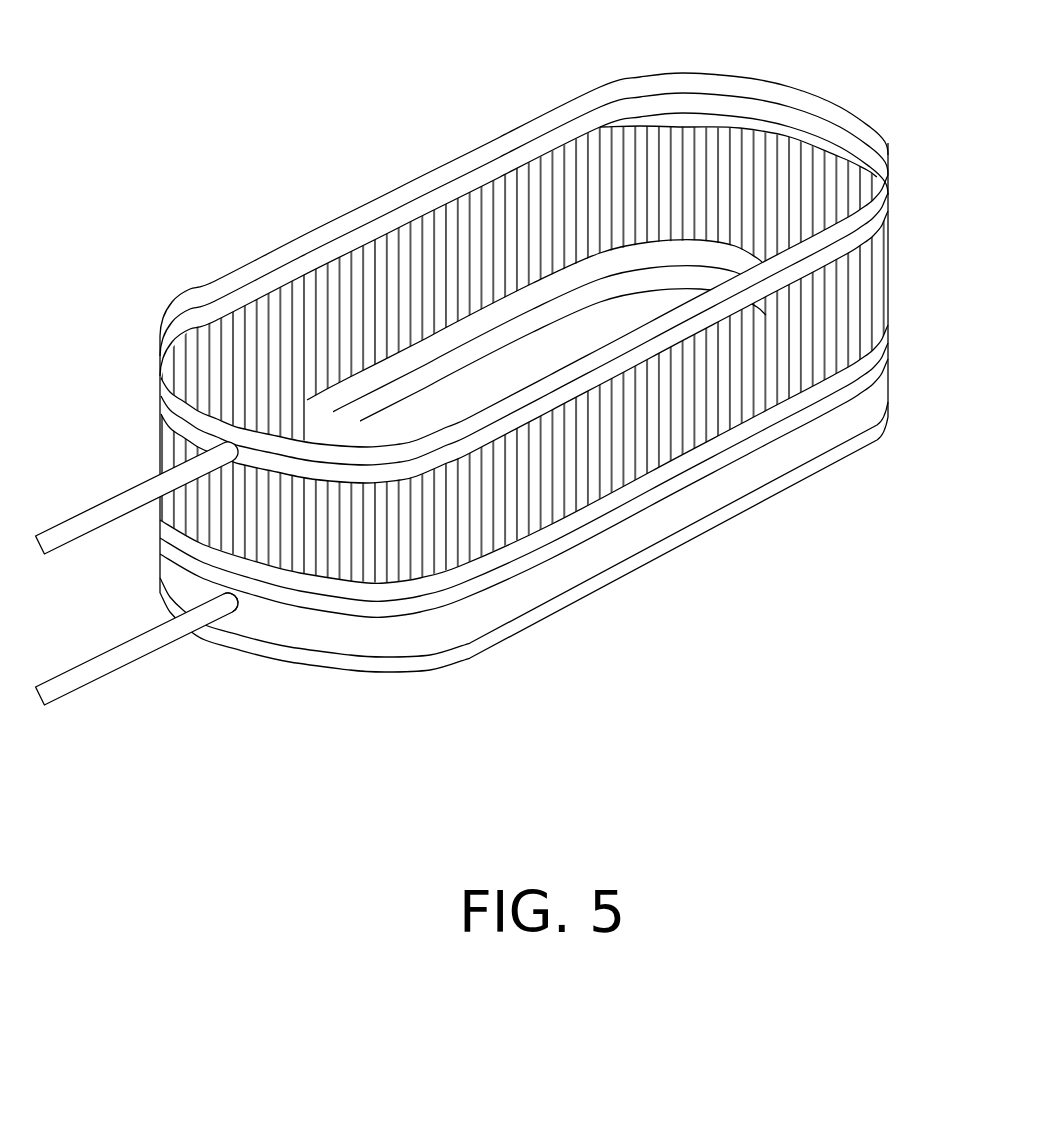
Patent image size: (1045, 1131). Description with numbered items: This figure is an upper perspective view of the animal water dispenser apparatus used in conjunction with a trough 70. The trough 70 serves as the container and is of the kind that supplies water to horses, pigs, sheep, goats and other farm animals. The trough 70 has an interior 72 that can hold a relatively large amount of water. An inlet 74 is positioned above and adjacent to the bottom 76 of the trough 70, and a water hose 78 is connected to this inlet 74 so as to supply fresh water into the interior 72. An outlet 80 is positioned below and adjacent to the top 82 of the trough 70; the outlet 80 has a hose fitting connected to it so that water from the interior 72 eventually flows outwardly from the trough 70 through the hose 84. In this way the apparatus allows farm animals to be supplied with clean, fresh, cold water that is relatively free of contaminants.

The trough 70 is at (492, 391).
The interior 72 is at (530, 185).
The inlet 74 is at (230, 618).
The bottom 76 is at (610, 585).
The water hose 78 is at (133, 680).
The outlet 80 is at (485, 349).
The top 82 is at (243, 268).
The hose 84 is at (100, 546).